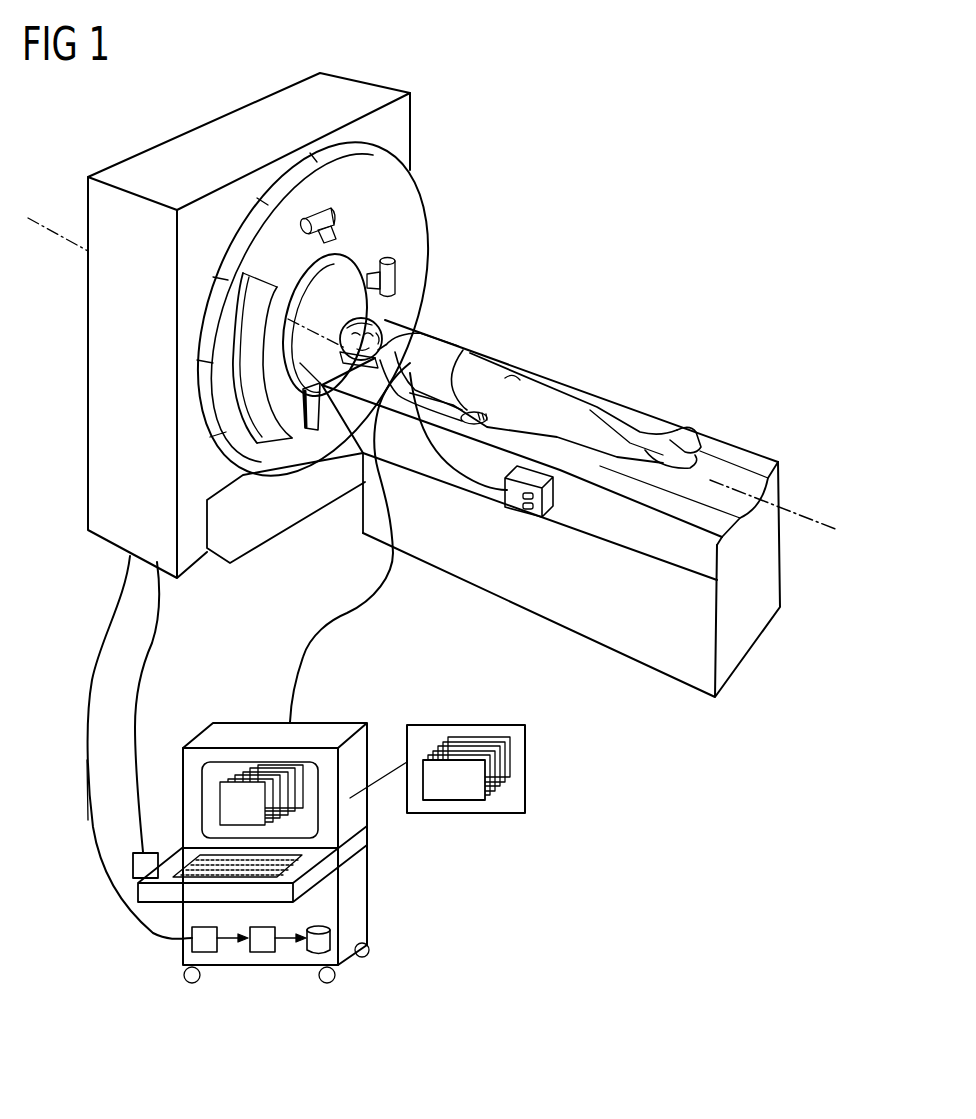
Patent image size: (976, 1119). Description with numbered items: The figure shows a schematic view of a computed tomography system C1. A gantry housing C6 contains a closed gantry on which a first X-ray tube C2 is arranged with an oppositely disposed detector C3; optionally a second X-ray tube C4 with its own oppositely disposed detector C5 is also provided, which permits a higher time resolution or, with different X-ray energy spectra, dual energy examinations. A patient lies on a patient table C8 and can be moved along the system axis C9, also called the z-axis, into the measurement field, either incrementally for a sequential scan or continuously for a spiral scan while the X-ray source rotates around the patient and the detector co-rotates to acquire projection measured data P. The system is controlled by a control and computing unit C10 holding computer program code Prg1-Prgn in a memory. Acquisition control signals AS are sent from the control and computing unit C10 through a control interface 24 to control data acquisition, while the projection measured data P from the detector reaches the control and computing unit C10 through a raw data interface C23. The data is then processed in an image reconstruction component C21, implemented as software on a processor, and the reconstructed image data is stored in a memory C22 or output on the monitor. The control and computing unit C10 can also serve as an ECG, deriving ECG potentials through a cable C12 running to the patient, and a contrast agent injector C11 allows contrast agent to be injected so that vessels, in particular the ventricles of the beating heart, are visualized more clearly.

The computed tomography system C1 is at (604, 217).
The first X-ray tube C2 is at (397, 277).
The detector C3 is at (263, 417).
The second X-ray tube C4 is at (343, 222).
The detector C5 is at (313, 417).
The gantry housing C6 is at (113, 537).
The patient table C8 is at (650, 657).
The system axis C9 is at (797, 513).
The control and computing unit C10 is at (358, 880).
The contrast agent injector C11 is at (530, 522).
The cable C12 is at (320, 625).
The image reconstruction component C21 is at (263, 953).
The memory C22 is at (333, 937).
The raw data interface C23 is at (203, 953).
The control interface 24 is at (140, 852).
The acquisition control signals AS is at (142, 683).
The projection measured data P is at (86, 793).
The computer program code Prg1-Prgn is at (453, 800).